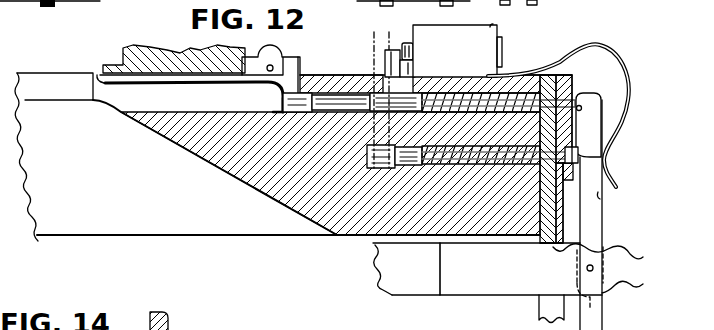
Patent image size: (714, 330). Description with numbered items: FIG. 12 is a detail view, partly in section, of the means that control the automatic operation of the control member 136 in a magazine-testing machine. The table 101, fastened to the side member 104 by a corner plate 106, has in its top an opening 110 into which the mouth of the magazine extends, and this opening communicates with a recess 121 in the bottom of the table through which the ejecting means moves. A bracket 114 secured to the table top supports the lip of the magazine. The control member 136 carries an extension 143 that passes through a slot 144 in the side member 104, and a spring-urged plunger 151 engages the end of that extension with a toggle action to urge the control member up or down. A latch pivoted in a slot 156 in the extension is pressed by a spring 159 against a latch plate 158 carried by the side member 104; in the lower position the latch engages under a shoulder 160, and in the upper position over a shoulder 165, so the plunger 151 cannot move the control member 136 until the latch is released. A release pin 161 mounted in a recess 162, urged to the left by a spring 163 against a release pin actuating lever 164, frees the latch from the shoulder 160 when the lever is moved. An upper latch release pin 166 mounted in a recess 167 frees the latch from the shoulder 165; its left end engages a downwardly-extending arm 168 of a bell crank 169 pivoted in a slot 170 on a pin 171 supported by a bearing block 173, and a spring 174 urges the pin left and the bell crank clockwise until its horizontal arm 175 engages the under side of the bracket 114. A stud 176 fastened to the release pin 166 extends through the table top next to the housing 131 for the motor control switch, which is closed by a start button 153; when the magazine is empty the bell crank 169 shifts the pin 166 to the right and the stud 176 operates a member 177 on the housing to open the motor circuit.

The table 101 is at (312, 215).
The side member 104 is at (592, 218).
The corner plate 106 is at (16, 28).
The opening 110 is at (92, 90).
The bracket 114 is at (170, 50).
The recess 121 is at (175, 143).
The housing 131 is at (493, 24).
The control member 136 is at (413, 291).
The extension 143 is at (484, 291).
The slot 144 is at (592, 240).
The spring-urged plunger 151 is at (598, 198).
The start button 153 is at (504, 55).
The slot 156 is at (590, 311).
The latch plate 158 is at (589, 94).
The spring 159 is at (612, 53).
The shoulder 160 is at (588, 158).
The release pin 161 is at (580, 146).
The recess 162 is at (497, 167).
The spring 163 is at (446, 167).
The release pin actuating lever 164 is at (367, 167).
The shoulder 165 is at (579, 105).
The upper latch release pin 166 is at (383, 75).
The recess 167 is at (331, 92).
The arm 168 is at (276, 100).
The bell crank 169 is at (276, 58).
The slot 170 is at (128, 113).
The pin 171 is at (268, 65).
The bearing block 173 is at (300, 60).
The spring 174 is at (514, 82).
The horizontal arm 175 is at (160, 78).
The stud 176 is at (410, 63).
The member 177 is at (413, 47).